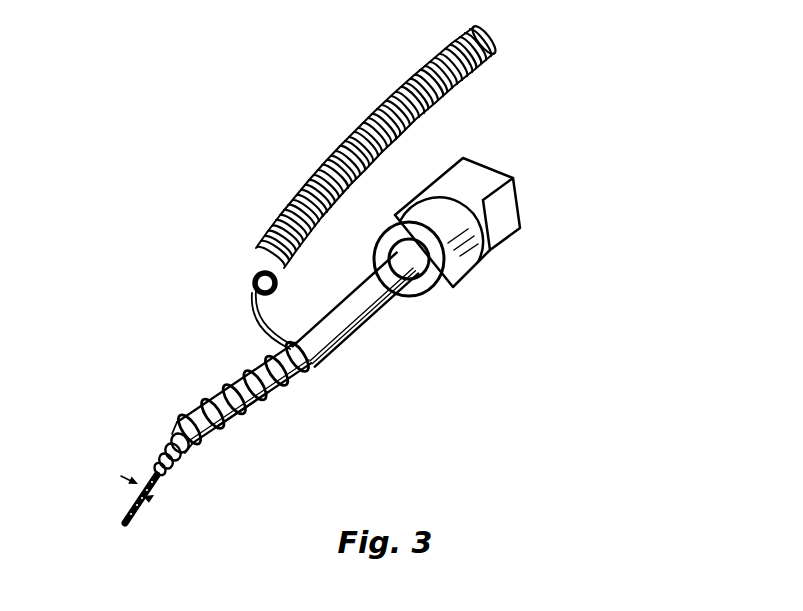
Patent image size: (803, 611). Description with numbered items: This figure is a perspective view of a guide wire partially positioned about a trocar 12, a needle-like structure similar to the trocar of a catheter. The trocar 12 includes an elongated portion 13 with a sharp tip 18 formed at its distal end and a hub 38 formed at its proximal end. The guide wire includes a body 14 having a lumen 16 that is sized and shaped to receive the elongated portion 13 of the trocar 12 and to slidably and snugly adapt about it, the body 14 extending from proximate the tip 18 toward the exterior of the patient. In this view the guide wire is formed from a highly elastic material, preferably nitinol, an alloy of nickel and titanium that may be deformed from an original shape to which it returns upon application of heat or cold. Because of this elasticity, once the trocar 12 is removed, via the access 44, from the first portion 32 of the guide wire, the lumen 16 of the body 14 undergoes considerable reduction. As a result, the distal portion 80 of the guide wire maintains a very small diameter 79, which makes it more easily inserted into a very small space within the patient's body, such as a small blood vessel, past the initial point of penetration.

The trocar 12 is at (343, 337).
The elongated portion 13 is at (383, 303).
The body 14 is at (272, 397).
The lumen 16 is at (125, 526).
The sharp tip 18 is at (182, 431).
The first portion 32 is at (234, 373).
The hub 38 is at (483, 258).
The access 44 is at (302, 348).
The very small diameter 79 is at (150, 498).
The distal portion 80 is at (128, 509).